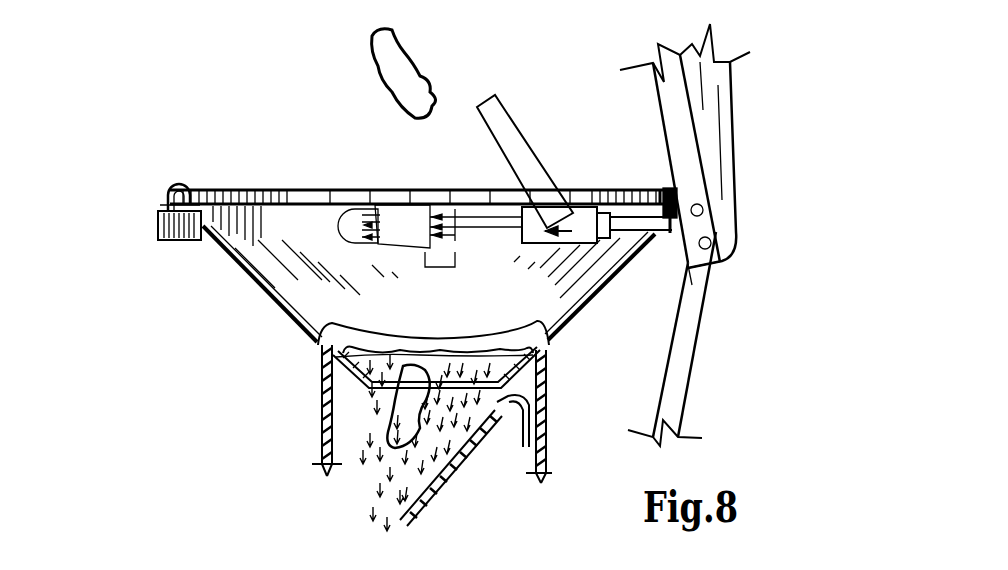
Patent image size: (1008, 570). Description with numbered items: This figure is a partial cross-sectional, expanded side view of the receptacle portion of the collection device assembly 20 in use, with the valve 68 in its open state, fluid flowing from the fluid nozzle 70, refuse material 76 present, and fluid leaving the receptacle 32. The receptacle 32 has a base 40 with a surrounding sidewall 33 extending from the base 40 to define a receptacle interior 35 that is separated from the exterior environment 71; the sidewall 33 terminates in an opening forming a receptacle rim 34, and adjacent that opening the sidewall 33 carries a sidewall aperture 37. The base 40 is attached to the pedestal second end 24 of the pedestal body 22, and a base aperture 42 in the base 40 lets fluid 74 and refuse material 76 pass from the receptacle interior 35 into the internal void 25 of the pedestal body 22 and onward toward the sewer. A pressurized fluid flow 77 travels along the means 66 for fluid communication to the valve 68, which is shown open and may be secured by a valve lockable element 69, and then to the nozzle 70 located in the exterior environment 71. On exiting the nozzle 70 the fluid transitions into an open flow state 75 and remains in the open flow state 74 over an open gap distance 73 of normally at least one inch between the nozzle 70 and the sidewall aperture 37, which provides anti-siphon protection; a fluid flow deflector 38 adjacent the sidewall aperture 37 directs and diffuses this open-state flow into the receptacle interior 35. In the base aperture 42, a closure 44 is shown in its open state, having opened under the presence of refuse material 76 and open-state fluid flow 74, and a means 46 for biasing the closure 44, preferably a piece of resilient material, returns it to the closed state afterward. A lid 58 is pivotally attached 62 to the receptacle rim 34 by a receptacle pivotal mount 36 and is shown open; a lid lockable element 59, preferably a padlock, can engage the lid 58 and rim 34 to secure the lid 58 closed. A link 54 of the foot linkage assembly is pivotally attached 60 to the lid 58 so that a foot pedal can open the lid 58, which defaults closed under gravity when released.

The collection device assembly 20 is at (300, 104).
The pedestal body 22 is at (320, 405).
The pedestal second end 24 is at (318, 337).
The internal void 25 is at (352, 423).
The receptacle 32 is at (143, 220).
The sidewall 33 is at (230, 243).
The receptacle rim 34 is at (175, 188).
The receptacle interior 35 is at (330, 380).
The receptacle pivotal mount 36 is at (688, 268).
The sidewall aperture 37 is at (355, 215).
The fluid flow deflector 38 is at (430, 205).
The base 40 is at (333, 352).
The base aperture 42 is at (390, 358).
The closure 44 is at (427, 497).
The means for biasing the closure 46 is at (515, 412).
The link 54 is at (673, 397).
The lid 58 is at (736, 75).
The lid lockable element 59 is at (165, 194).
The pivotal attachment of link to lid 60 is at (711, 243).
The pivotal attachment of lid 62 is at (704, 208).
The means for fluid communication 66 is at (630, 280).
The valve 68 is at (663, 195).
The valve lockable element 69 is at (563, 217).
The fluid nozzle 70 is at (468, 224).
The exterior environment 71 is at (728, 272).
The open gap distance 73 is at (441, 268).
The fluid in open flow state 74 is at (410, 220).
The open flow state transition 75 is at (440, 217).
The refuse material 76 is at (370, 40).
The pressurized fluid flow 77 is at (667, 193).